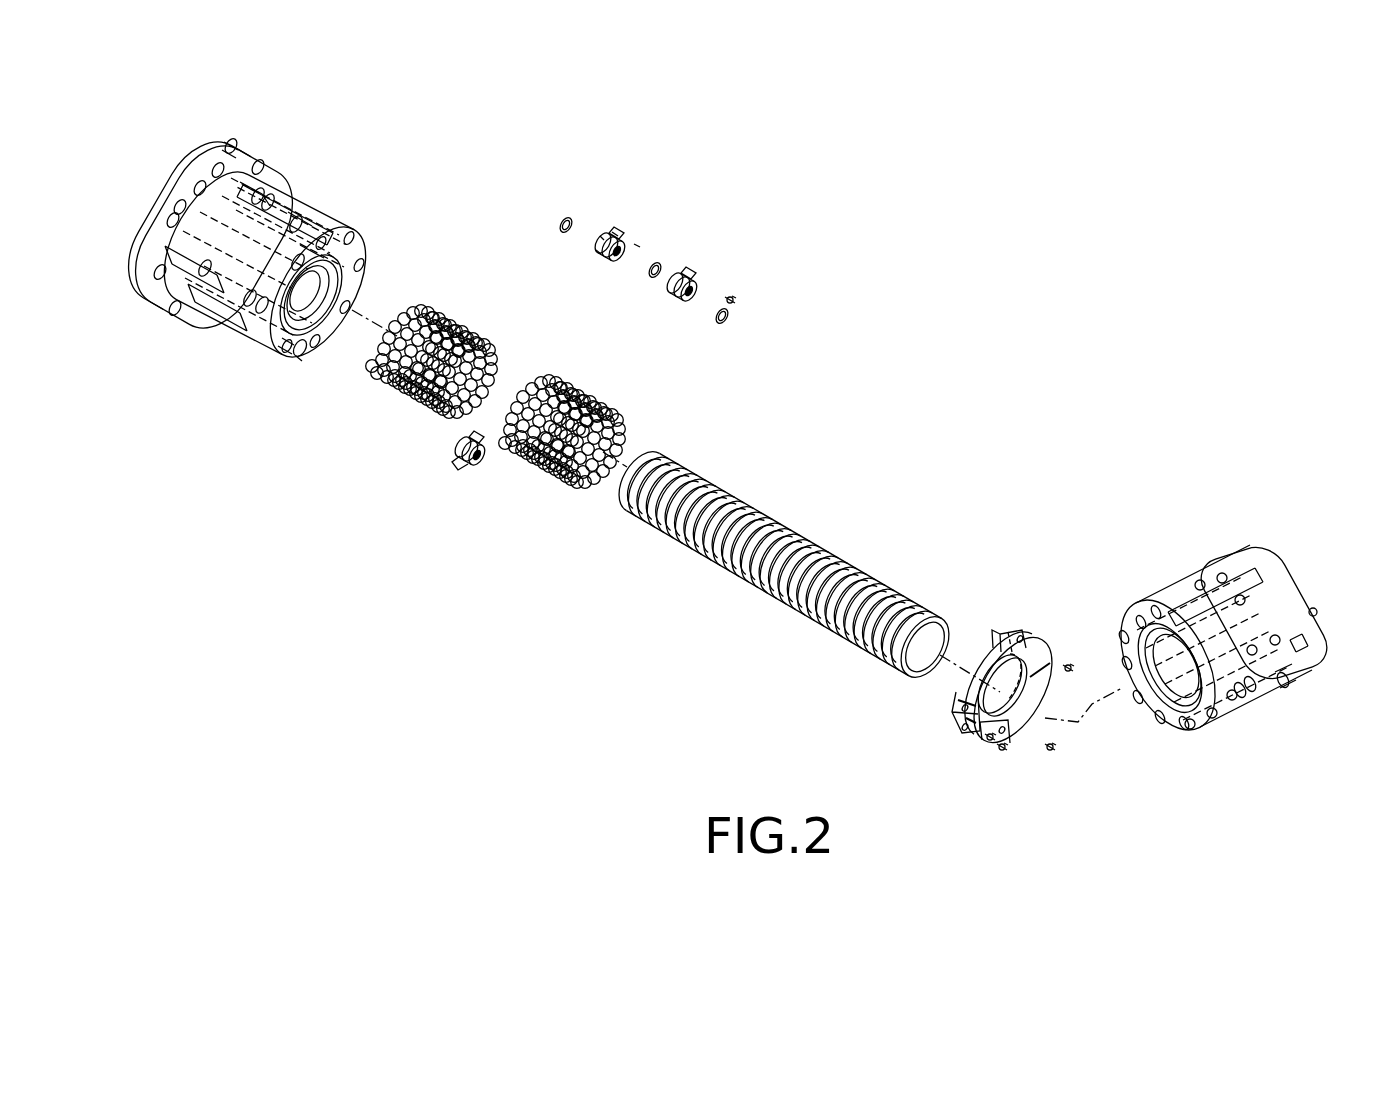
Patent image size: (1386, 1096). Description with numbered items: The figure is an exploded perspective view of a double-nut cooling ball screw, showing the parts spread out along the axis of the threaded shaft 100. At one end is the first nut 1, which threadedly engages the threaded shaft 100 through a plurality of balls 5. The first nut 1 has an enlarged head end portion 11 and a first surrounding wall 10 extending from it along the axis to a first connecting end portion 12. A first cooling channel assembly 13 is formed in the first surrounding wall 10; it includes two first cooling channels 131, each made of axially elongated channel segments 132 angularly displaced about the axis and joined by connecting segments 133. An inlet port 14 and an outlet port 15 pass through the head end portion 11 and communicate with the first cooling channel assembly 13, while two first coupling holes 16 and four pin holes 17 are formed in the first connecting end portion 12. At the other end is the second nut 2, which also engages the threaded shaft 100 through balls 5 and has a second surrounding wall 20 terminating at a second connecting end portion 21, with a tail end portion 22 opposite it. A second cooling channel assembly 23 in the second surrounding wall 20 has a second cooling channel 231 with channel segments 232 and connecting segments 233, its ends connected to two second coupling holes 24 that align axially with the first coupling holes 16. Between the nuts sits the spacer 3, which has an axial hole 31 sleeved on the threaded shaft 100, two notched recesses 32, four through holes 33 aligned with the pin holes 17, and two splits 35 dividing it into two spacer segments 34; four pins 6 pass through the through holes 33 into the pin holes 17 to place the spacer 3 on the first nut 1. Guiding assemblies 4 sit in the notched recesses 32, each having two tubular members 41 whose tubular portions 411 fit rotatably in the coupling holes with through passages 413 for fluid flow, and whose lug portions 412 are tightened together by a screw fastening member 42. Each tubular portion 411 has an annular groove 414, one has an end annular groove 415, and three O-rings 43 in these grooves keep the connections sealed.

The first nut 1 is at (253, 251).
The first surrounding wall 10 is at (292, 195).
The head end portion 11 is at (180, 175).
The first connecting end portion 12 is at (350, 262).
The first cooling channel assembly 13 is at (273, 192).
The first cooling channel 131 is at (305, 222).
The channel segment 132 is at (245, 312).
The connecting segment 133 is at (215, 295).
The inlet port 14 is at (234, 144).
The outlet port 15 is at (160, 298).
The first coupling hole 16 is at (292, 352).
The pin hole 17 is at (268, 335).
The second nut 2 is at (1235, 638).
The second surrounding wall 20 is at (1186, 590).
The second connecting end portion 21 is at (1150, 705).
The tail end portion 22 is at (1302, 598).
The second cooling channel assembly 23 is at (1270, 590).
The second cooling channel 231 is at (1315, 663).
The channel segment 232 is at (1250, 690).
The connecting segment 233 is at (1280, 680).
The second coupling hole 24 is at (1205, 732).
The spacer 3 is at (996, 683).
The axial hole 31 is at (1015, 675).
The notched recess 32 is at (975, 662).
The through hole 33 is at (960, 708).
The spacer segment 34 is at (1012, 645).
The split 35 is at (1042, 670).
The guiding assembly 4 is at (629, 342).
The tubular member 41 is at (600, 250).
The tubular portion 411 is at (598, 260).
The lug portion 412 is at (624, 234).
The through passage 413 is at (618, 258).
The annular groove 414 is at (601, 233).
The end annular groove 415 is at (640, 244).
The fastening member 42 is at (735, 300).
The O-ring 43 is at (566, 215).
The balls 5 is at (440, 312).
The pin 6 is at (988, 746).
The threaded shaft 100 is at (745, 585).